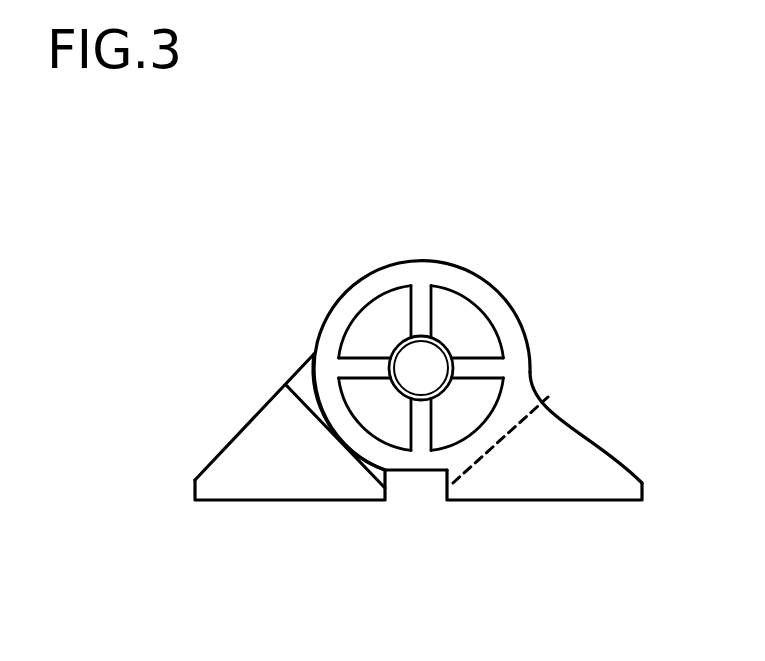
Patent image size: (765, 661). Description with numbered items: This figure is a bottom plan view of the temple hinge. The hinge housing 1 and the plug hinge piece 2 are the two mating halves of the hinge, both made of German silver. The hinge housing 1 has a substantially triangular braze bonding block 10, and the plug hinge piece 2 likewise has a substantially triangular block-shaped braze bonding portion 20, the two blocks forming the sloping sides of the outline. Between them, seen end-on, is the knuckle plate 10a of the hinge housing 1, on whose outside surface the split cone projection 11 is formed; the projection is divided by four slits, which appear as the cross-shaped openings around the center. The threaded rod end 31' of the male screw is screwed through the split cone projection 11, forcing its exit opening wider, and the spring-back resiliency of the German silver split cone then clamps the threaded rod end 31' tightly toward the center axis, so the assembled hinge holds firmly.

The hinge housing 1 is at (555, 465).
The plug hinge piece 2 is at (276, 459).
The braze bonding block 10 is at (558, 505).
The knuckle plate 10a is at (424, 262).
The split cone projection 11 is at (390, 312).
The braze bonding portion 20 is at (268, 503).
The threaded rod end 31' is at (404, 472).